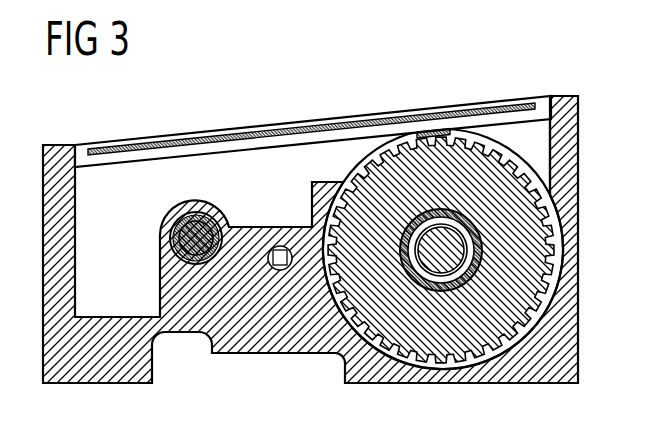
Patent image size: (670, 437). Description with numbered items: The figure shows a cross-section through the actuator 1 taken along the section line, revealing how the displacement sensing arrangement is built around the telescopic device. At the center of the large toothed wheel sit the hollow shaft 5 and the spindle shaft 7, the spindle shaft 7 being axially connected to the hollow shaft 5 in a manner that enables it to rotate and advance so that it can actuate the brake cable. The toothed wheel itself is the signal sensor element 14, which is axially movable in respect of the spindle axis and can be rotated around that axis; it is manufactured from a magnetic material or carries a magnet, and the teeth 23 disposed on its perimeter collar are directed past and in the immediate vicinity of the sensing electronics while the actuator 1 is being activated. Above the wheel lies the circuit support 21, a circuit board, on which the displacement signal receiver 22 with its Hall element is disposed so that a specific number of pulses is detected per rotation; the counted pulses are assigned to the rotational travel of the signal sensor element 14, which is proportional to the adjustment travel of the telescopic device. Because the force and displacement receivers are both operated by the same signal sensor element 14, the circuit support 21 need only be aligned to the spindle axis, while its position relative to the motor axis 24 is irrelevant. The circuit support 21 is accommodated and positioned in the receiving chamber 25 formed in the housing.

The actuator 1 is at (270, 343).
The hollow shaft 5 is at (440, 292).
The spindle shaft 7 is at (456, 251).
The signal sensor element 14 is at (542, 254).
The circuit support 21 is at (313, 126).
The displacement signal receiver 22 is at (432, 129).
The teeth 23 is at (547, 305).
The motor axis 24 is at (195, 228).
The receiving chamber 25 is at (82, 152).